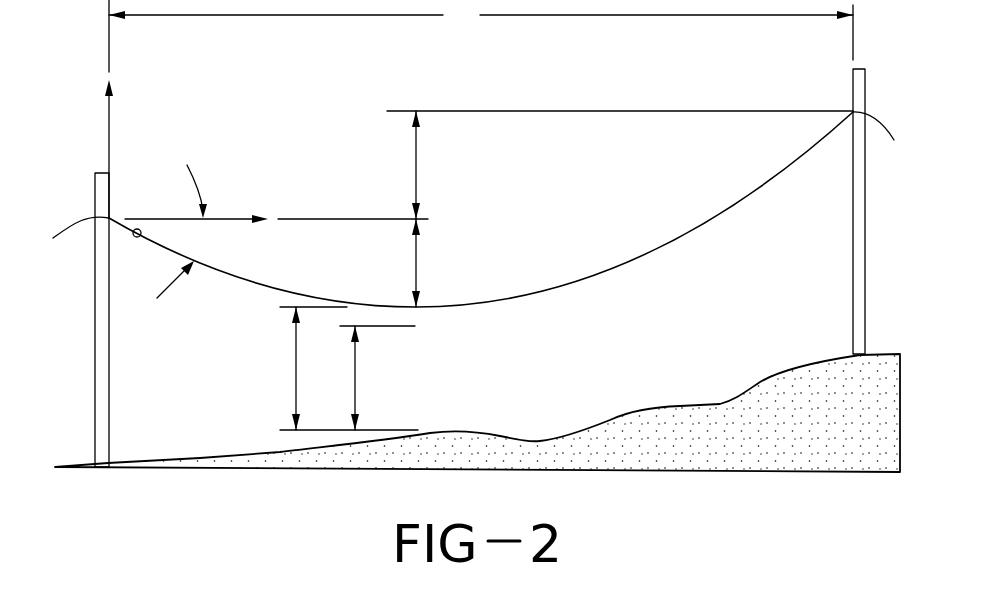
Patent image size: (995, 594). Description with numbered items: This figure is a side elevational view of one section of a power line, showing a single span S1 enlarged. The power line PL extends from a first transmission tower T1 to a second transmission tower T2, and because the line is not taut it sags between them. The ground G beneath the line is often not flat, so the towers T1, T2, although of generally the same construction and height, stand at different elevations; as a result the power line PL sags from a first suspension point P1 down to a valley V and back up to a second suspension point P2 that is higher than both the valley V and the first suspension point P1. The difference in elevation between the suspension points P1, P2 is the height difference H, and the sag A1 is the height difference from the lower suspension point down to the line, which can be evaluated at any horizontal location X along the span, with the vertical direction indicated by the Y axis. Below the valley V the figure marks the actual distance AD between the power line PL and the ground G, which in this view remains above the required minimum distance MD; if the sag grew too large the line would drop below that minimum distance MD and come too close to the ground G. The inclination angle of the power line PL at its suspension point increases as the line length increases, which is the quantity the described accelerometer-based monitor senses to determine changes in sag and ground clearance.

The span S1 is at (481, 36).
The Y axis Y is at (117, 149).
The horizontal location X is at (276, 208).
The first suspension point P1 is at (109, 218).
The second suspension point P2 is at (853, 112).
The first transmission tower T1 is at (108, 365).
The second transmission tower T2 is at (852, 277).
The power line PL is at (672, 246).
The height difference H is at (620, 165).
The sag A1 is at (430, 263).
The actual distance AD is at (348, 368).
The minimum distance MD is at (375, 378).
The valley V is at (436, 324).
The ground G is at (755, 381).